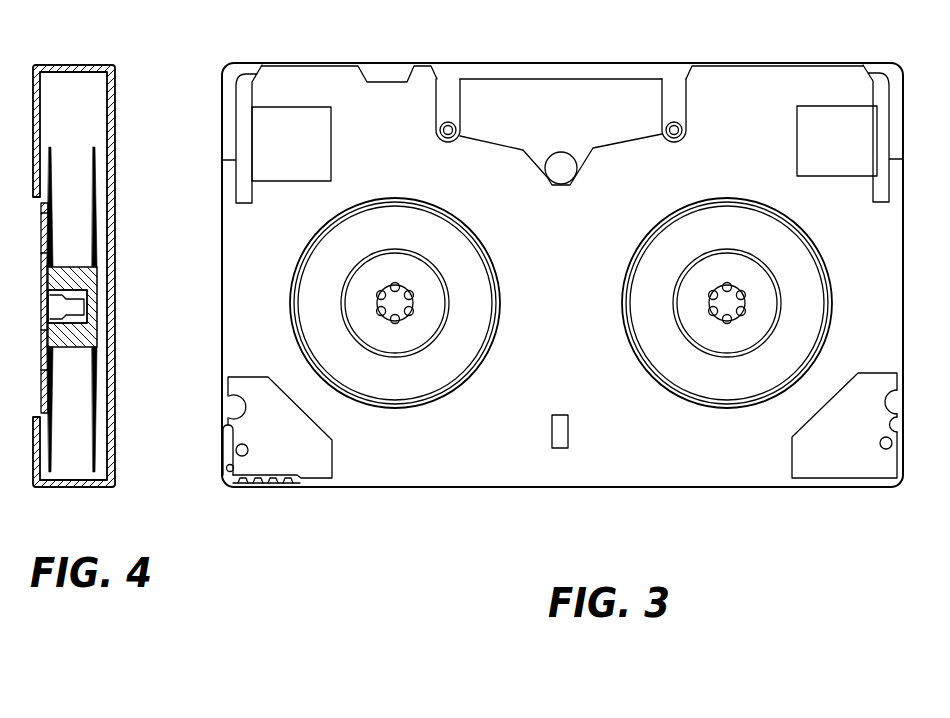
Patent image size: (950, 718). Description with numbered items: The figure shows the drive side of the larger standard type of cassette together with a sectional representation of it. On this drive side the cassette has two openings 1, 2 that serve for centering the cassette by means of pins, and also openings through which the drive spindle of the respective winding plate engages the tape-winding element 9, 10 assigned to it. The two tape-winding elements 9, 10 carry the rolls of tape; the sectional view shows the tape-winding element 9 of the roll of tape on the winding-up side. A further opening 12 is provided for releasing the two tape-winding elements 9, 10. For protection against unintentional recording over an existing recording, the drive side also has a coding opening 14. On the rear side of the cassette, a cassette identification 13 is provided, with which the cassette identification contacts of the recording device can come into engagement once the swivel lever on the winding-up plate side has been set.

In FIG. 3, the opening 1 is at (449, 122).
In FIG. 3, the opening 2 is at (670, 122).
In FIG. 4, the tape-winding element 9 is at (90, 280).
In FIG. 3, the tape-winding element 9 is at (311, 312).
In FIG. 3, the tape-winding element 10 is at (725, 382).
In FIG. 3, the further opening 12 is at (560, 440).
In FIG. 3, the cassette identification 13 is at (255, 488).
In FIG. 3, the coding opening 14 is at (225, 477).